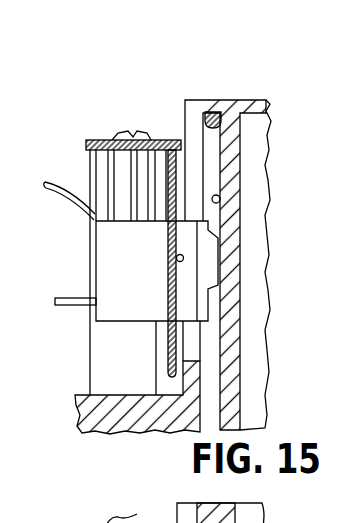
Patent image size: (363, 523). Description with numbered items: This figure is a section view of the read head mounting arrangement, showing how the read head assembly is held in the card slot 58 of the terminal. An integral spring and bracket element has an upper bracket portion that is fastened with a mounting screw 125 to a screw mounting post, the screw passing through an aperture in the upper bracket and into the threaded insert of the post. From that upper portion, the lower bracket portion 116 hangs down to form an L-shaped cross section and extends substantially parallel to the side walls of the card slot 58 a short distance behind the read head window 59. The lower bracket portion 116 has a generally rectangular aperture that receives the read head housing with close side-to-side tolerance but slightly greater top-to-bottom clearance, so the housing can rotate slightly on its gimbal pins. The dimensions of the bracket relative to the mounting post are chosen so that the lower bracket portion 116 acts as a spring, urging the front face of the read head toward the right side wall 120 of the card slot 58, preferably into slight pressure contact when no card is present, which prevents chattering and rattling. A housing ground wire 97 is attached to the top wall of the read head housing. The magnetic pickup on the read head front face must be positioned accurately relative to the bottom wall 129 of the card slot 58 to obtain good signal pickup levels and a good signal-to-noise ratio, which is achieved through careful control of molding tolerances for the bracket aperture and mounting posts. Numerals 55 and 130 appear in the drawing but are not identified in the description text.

The piston assembly 55 is at (75, 262).
The card slot 58 is at (205, 167).
The read head window 59 is at (185, 342).
The housing ground wire 97 is at (53, 172).
The lower bracket portion 116 is at (173, 146).
The right side wall of card slot 120 is at (205, 194).
The mounting screw 125 is at (110, 128).
The bottom wall of card slot 129 is at (214, 105).
The element 130 is at (150, 513).